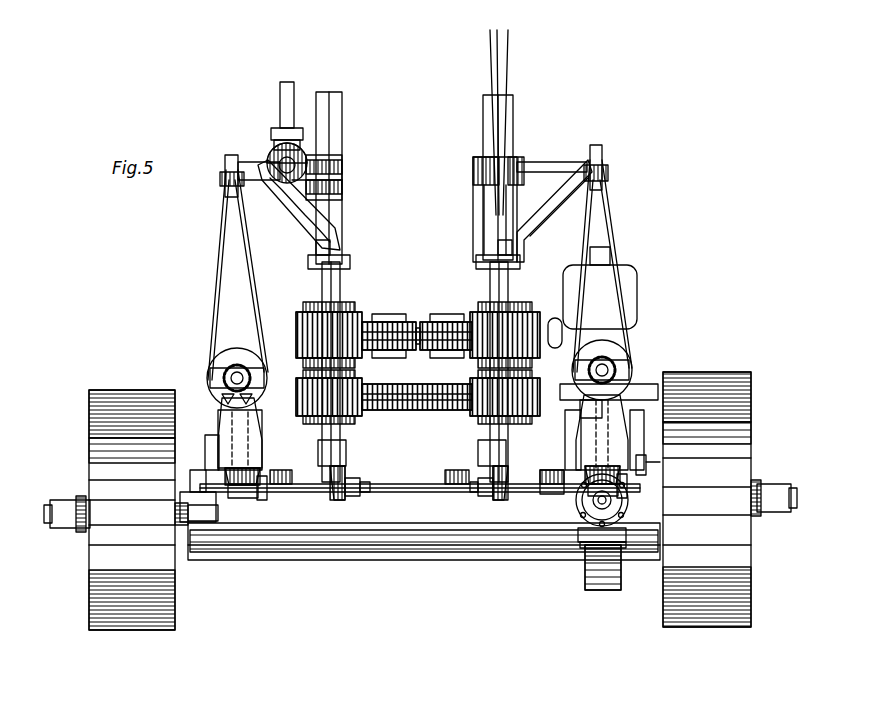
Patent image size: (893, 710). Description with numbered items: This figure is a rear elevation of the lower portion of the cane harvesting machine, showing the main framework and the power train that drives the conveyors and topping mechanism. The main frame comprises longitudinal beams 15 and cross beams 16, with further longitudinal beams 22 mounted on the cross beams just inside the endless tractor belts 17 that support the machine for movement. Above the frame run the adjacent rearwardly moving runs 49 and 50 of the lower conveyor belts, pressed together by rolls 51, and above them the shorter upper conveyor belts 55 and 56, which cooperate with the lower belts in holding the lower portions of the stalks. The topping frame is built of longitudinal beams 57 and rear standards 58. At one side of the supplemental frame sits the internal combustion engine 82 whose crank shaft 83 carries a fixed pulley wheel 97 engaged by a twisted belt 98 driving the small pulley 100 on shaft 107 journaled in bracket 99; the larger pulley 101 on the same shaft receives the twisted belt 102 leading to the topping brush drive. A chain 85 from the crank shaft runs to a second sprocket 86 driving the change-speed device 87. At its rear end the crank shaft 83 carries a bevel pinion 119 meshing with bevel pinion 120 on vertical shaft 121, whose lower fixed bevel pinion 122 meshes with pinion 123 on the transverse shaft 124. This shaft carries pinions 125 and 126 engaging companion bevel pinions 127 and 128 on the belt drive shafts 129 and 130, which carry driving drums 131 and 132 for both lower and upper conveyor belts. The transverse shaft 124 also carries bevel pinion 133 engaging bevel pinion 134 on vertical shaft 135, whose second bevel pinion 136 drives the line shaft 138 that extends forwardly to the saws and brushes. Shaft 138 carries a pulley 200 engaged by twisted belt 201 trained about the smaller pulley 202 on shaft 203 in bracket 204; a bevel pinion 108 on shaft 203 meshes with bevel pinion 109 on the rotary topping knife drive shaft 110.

The longitudinal beams 15 is at (55, 500).
The cross beams 16 is at (175, 542).
The endless tractor belts 17 is at (89, 436).
The longitudinal beams 22 is at (200, 522).
The run of lower conveyor belt 49 is at (322, 384).
The run of lower conveyor belt 50 is at (446, 412).
The rolls 51 is at (416, 350).
The upper conveyor belt 55 is at (448, 322).
The upper conveyor belt 56 is at (296, 326).
The longitudinal beams 57 is at (350, 262).
The rear standards 58 is at (342, 98).
The internal combustion engine 82 is at (625, 265).
The crank shaft 83 is at (608, 370).
The chain 85 is at (628, 440).
The second sprocket 86 is at (578, 520).
The change-speed device 87 is at (585, 560).
The fixed pulley wheel 97 is at (612, 348).
The twisted belt 98 is at (590, 234).
The bracket 99 is at (473, 212).
The small pulley 100 is at (604, 162).
The larger pulley 101 is at (483, 148).
The twisted belt 102 is at (512, 58).
The shaft 107 is at (552, 162).
The bevel pinion 108 is at (290, 195).
The bevel pinion 109 is at (275, 150).
The rotary topping knife drive shaft 110 is at (280, 96).
The bevel pinion 119 is at (600, 356).
The bevel pinion 120 is at (620, 390).
The vertical shaft 121 is at (648, 462).
The fixed bevel pinion 122 is at (628, 480).
The bevel pinion 123 is at (560, 498).
The transverse shaft 124 is at (428, 492).
The pinion 125 is at (494, 500).
The pinion 126 is at (344, 498).
The bevel pinion 127 is at (480, 468).
The bevel pinion 128 is at (346, 462).
The belt drive shaft 129 is at (496, 416).
The belt drive shaft 130 is at (362, 410).
The driving drum 131 is at (530, 340).
The driving drum 132 is at (296, 322).
The bevel pinion 133 is at (260, 490).
The bevel pinion 134 is at (258, 462).
The vertical shaft 135 is at (240, 440).
The second bevel pinion 136 is at (224, 398).
The shaft 138 is at (224, 362).
The pulley 200 is at (222, 356).
The twisted belt 201 is at (212, 276).
The smaller pulley 202 is at (226, 168).
The shaft 203 is at (290, 186).
The bracket 204 is at (332, 212).